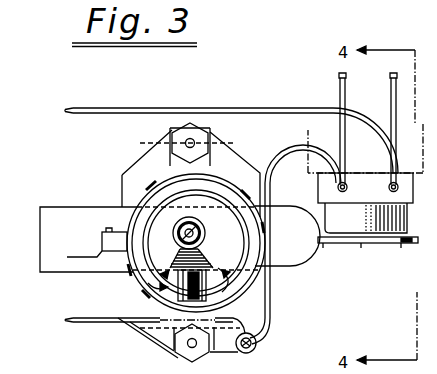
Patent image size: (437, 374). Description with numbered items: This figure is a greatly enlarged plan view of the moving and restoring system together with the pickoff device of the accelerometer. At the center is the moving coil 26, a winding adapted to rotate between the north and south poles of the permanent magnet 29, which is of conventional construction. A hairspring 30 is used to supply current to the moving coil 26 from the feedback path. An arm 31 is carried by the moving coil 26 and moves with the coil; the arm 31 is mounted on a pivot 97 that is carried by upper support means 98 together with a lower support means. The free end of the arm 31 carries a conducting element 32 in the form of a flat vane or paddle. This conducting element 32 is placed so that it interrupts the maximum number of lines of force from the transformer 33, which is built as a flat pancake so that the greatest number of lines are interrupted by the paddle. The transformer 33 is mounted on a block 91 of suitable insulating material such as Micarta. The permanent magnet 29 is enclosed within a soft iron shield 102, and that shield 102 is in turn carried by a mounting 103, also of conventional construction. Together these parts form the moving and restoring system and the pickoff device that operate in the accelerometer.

The moving coil 26 is at (200, 297).
The magnet 29 is at (158, 290).
The hairspring 30 is at (215, 263).
The arm 31 is at (290, 252).
The conducting element 32 is at (410, 246).
The transformer 33 is at (361, 241).
The block 91 is at (356, 199).
The pivot 97 is at (176, 241).
The upper support means 98 is at (208, 131).
The soft iron shield 102 is at (121, 191).
The mounting 103 is at (233, 163).